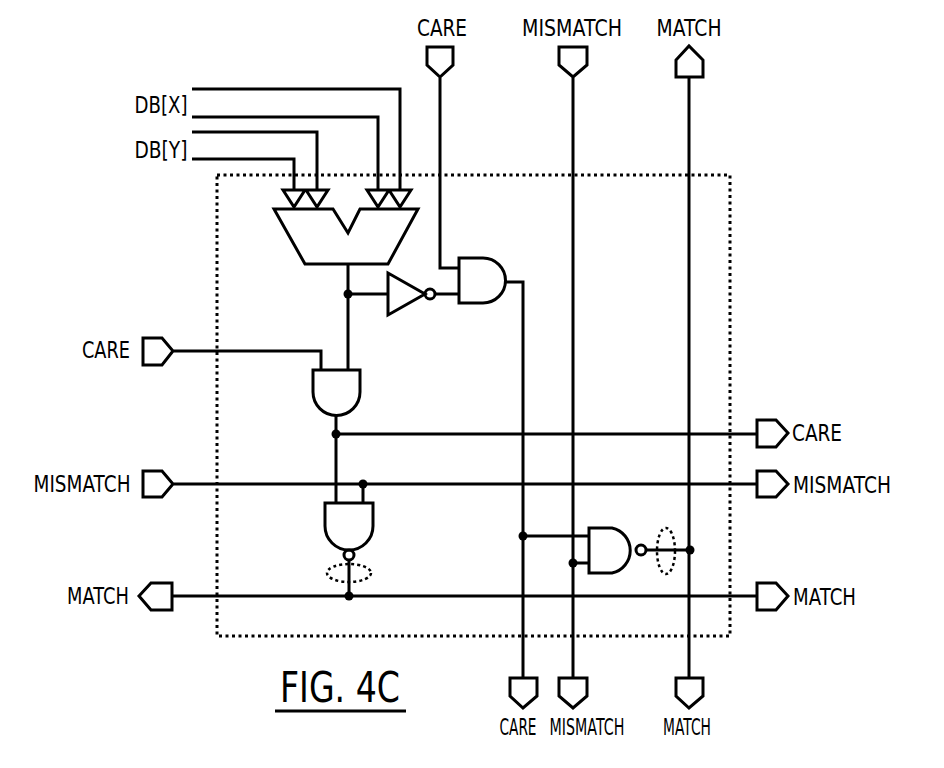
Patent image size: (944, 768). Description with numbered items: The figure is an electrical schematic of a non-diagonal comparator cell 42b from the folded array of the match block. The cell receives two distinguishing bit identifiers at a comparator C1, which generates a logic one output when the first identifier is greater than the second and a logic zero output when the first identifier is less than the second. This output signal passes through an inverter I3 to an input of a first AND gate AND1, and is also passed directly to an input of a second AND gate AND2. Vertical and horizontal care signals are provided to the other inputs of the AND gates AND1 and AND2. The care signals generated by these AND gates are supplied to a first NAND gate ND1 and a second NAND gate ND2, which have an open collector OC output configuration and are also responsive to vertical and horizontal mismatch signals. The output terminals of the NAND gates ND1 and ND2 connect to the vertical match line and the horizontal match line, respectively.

The non-diagonal comparator cell 42b is at (730, 255).
The comparator C1 is at (292, 243).
The inverter I3 is at (410, 303).
The first AND gate AND1 is at (475, 258).
The second AND gate AND2 is at (360, 403).
The first NAND gate ND1 is at (606, 528).
The second NAND gate ND2 is at (373, 528).
The open collector output configuration OC is at (368, 578).